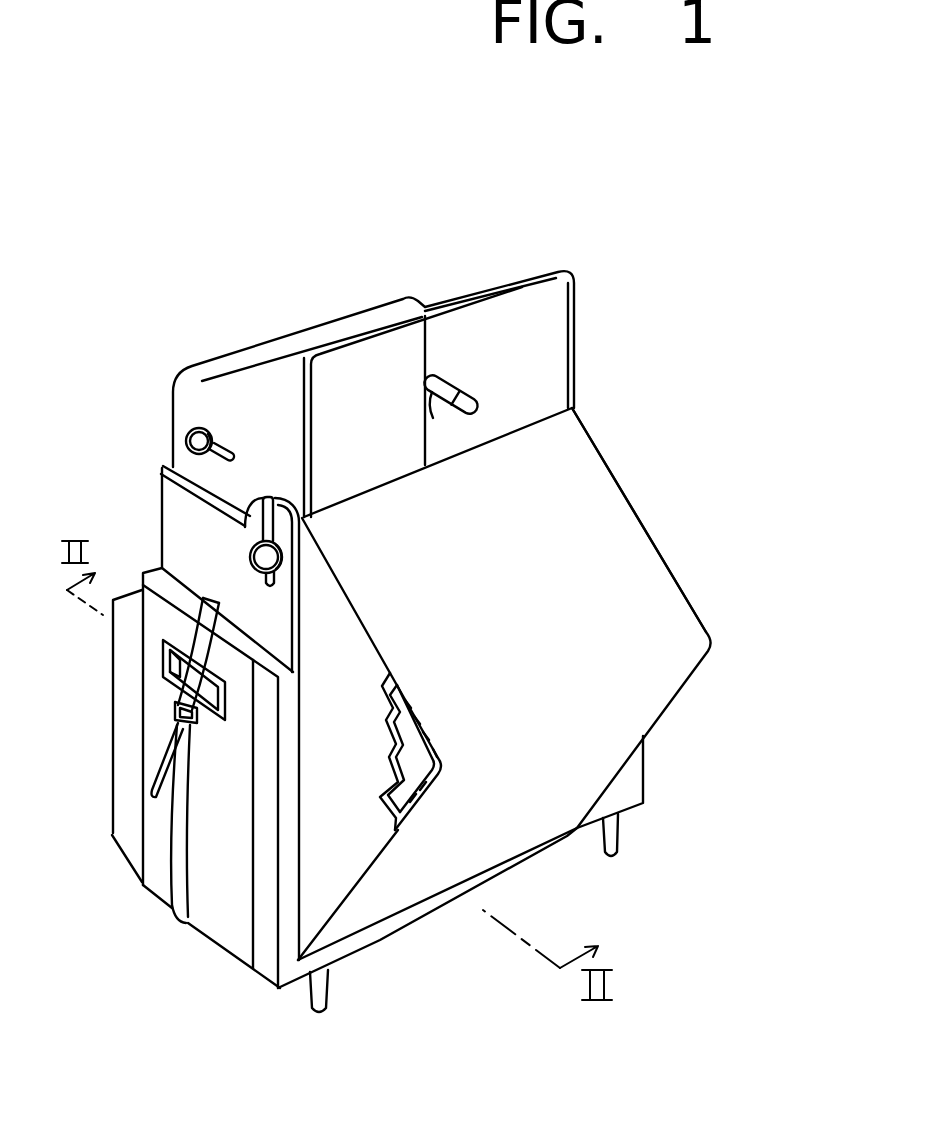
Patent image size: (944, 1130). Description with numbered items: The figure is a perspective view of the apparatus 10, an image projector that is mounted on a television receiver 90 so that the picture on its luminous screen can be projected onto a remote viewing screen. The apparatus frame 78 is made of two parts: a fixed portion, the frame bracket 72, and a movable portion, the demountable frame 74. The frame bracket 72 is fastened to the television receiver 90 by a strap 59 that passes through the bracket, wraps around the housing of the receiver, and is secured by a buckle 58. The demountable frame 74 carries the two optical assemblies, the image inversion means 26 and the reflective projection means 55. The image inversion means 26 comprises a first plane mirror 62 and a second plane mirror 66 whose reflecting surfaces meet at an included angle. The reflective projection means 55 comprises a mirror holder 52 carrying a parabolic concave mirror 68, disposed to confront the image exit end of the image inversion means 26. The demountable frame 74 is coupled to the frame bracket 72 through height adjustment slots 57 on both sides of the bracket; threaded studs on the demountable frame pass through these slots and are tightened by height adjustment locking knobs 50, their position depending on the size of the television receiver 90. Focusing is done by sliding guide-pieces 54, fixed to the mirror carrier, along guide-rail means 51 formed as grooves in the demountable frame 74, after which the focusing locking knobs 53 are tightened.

The apparatus 10 is at (700, 549).
The image inversion means 26 is at (660, 729).
The height adjustment locking knob 50 is at (248, 556).
The guide-rail means 51 is at (472, 397).
The mirror holder 52 is at (427, 359).
The focusing locking knob 53 is at (207, 431).
The guide-piece 54 is at (446, 420).
The reflective projection means 55 is at (148, 430).
The height adjustment slot 57 is at (269, 496).
The buckle 58 is at (193, 720).
The strap 59 is at (180, 812).
The first plane mirror 62 is at (400, 790).
The second plane mirror 66 is at (398, 737).
The parabolic concave mirror 68 is at (378, 424).
The frame bracket 72 is at (161, 515).
The demountable frame 74 is at (622, 498).
The apparatus frame 78 is at (162, 468).
The television receiver 90 is at (217, 925).